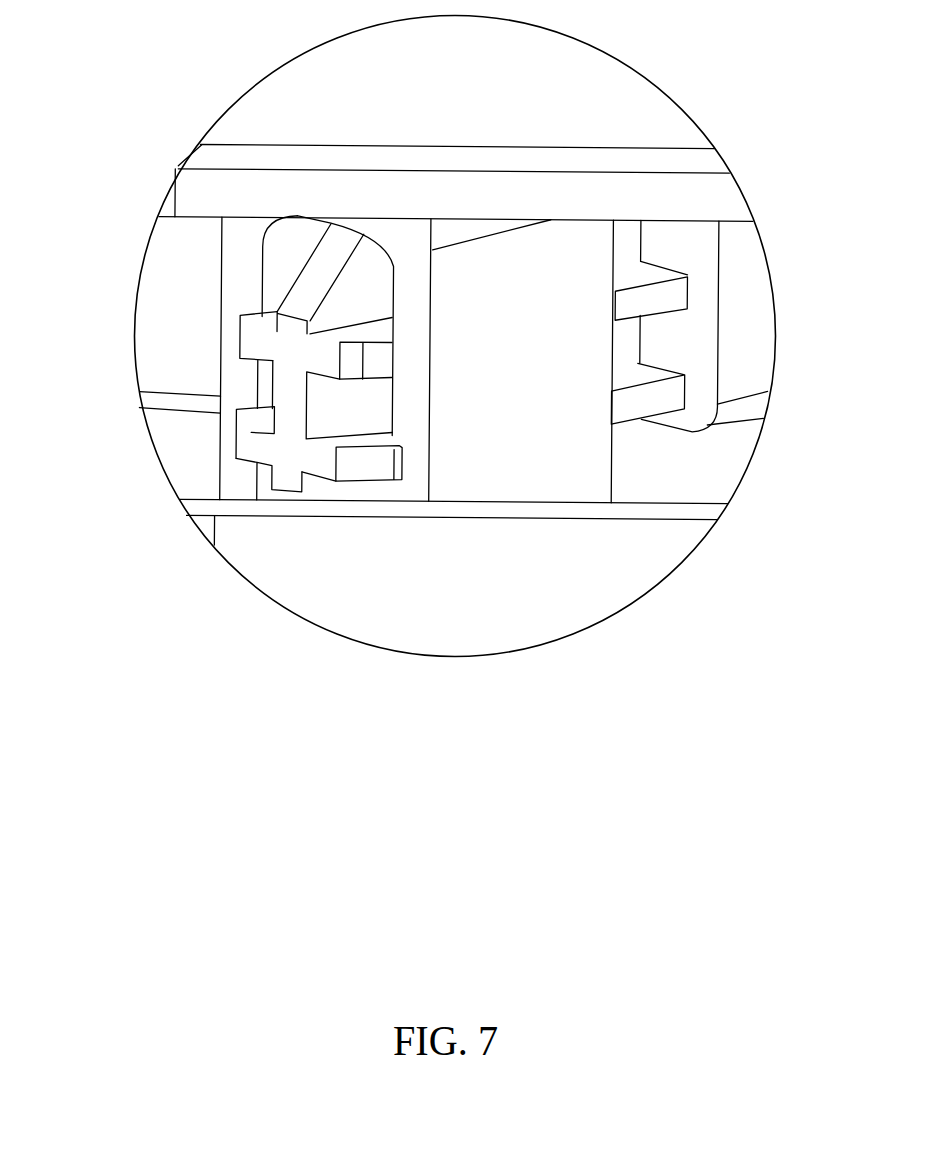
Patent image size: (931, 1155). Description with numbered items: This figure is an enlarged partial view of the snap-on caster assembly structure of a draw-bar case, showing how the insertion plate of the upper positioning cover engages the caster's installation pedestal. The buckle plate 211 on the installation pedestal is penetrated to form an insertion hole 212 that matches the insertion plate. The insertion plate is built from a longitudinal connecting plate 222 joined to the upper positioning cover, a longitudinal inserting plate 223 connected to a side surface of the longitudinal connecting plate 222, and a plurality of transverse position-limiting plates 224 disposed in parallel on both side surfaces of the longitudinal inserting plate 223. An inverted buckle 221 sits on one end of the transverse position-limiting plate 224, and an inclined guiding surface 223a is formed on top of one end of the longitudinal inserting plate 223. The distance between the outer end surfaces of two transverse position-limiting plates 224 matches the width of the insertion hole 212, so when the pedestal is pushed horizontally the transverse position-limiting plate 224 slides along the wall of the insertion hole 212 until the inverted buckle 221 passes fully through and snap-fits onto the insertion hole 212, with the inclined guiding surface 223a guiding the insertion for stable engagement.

The buckle plate 211 is at (592, 458).
The insertion hole 212 is at (380, 302).
The inverted buckle 221 is at (398, 468).
The longitudinal connecting plate 222 is at (705, 320).
The longitudinal inserting plate 223 is at (287, 412).
The inclined guiding surface 223a is at (310, 283).
The transverse position-limiting plate 224 is at (310, 335).